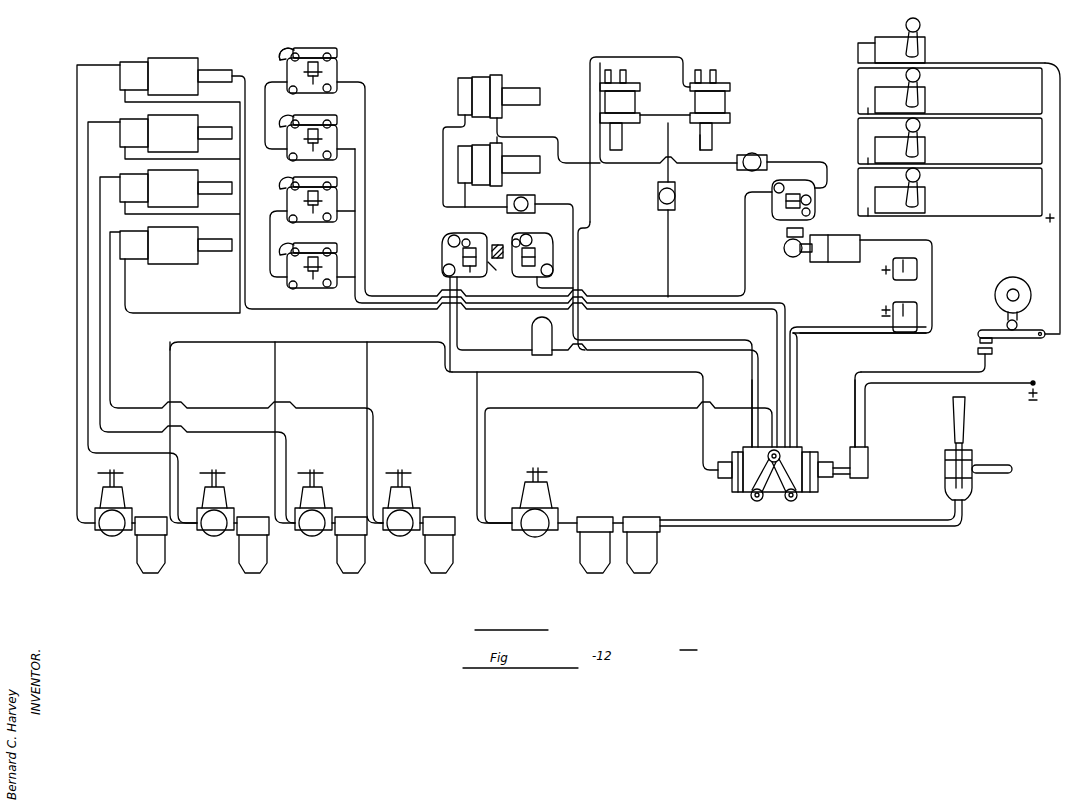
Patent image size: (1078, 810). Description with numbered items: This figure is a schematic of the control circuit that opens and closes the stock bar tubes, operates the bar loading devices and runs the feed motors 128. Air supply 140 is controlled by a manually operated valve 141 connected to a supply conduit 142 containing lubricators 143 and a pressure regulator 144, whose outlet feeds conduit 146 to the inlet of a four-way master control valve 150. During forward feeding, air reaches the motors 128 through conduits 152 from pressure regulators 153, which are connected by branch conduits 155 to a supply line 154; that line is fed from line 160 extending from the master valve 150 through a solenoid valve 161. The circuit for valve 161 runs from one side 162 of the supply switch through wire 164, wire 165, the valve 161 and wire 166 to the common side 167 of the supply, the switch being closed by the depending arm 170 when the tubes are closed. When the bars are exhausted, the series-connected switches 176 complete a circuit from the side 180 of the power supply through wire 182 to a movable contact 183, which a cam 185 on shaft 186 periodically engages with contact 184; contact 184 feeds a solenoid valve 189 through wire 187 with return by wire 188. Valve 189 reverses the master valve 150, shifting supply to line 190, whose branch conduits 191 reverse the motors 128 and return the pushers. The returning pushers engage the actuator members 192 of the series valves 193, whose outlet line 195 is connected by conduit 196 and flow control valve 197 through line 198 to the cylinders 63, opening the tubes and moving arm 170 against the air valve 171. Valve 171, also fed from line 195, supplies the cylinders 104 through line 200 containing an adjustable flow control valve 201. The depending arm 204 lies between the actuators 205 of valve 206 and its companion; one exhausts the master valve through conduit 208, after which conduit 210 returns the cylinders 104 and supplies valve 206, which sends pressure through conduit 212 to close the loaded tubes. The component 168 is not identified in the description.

The cylinder 63 is at (665, 110).
The cylinders 104 is at (482, 75).
The fluid operated motor 128 is at (176, 161).
The air supply 140 is at (990, 475).
The manually operated valve 141 is at (945, 468).
The supply conduit 142 is at (722, 527).
The lubricators 143 is at (583, 552).
The pressure regulator 144 is at (550, 496).
The conduit 146 is at (566, 410).
The four-way master control valve 150 is at (802, 478).
The conduits 152 is at (77, 383).
The pressure regulators 153 is at (135, 500).
The supply line 154 is at (354, 342).
The branch conduits 155 is at (172, 372).
The line 160 is at (751, 377).
The solenoid valve 161 is at (533, 328).
The one side of supply 162 is at (900, 262).
The wire 164 is at (934, 286).
The wire 165 is at (836, 326).
The wire 166 is at (868, 334).
The common side of the supply 167 is at (900, 317).
The relay 168 is at (836, 258).
The depending arm 170 is at (787, 233).
The air valve 171 is at (790, 186).
The switches 176 is at (900, 115).
The side of power supply 180 is at (938, 220).
The wire 182 is at (1060, 232).
The movable contact 183 is at (1008, 339).
The contact 184 is at (977, 351).
The cam 185 is at (1000, 308).
The shaft 186 is at (1007, 293).
The wire 187 is at (854, 417).
The wire 188 is at (866, 405).
The solenoid valve 189 is at (868, 453).
The line 190 is at (420, 314).
The branch conduits 191 is at (212, 105).
The actuator members 192 is at (283, 46).
The valves 193 is at (318, 92).
The outlet line 195 is at (366, 131).
The conduit 196 is at (669, 266).
The flow control valve 197 is at (676, 199).
The line 198 is at (668, 133).
The line 200 is at (640, 165).
The adjustable flow control valve 201 is at (757, 152).
The depending arm 204 is at (497, 244).
The actuators 205 is at (496, 271).
The valve 206 is at (549, 248).
The conduit 208 is at (574, 372).
The conduit 210 is at (443, 152).
The conduit 212 is at (590, 103).